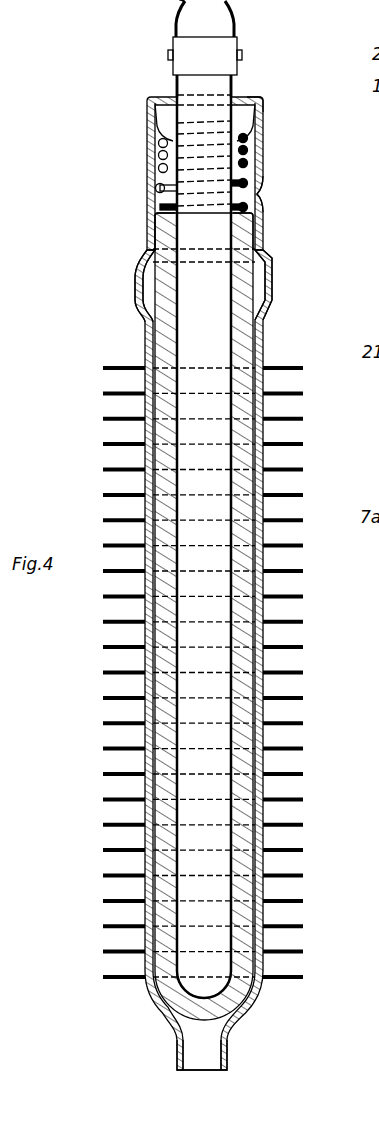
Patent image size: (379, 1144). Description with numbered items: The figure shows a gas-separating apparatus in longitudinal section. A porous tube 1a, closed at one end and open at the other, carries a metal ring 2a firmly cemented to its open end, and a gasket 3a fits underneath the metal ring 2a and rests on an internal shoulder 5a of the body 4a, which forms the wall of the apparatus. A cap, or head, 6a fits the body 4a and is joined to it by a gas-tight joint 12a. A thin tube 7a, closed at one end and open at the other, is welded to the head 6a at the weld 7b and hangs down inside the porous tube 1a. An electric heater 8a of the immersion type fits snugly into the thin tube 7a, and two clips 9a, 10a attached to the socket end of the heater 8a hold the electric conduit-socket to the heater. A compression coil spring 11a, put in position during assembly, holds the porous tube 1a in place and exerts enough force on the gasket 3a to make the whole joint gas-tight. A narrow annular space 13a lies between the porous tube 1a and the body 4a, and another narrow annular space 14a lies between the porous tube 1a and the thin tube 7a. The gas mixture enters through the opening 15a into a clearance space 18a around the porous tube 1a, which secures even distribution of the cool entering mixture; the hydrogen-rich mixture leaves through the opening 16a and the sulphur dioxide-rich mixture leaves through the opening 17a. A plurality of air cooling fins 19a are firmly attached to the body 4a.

The porous tube 1a is at (247, 585).
The metal ring 2a is at (265, 235).
The gasket 3a is at (256, 251).
The body 4a is at (265, 342).
The internal shoulder 5a is at (150, 254).
The cap 6a is at (265, 111).
The thin tube 7a is at (176, 112).
The weld 7b is at (158, 188).
The electric heater 8a is at (185, 88).
The clip 9a is at (177, 21).
The clip 10a is at (232, 23).
The compression coil spring 11a is at (160, 155).
The gas-tight joint 12a is at (260, 97).
The narrow annular space 13a is at (263, 638).
The narrow annular space 14a is at (233, 690).
The gas mixture inlet opening 15a is at (272, 291).
The hydrogen-rich mixture outlet opening 16a is at (263, 195).
The sulphur dioxide-rich mixture outlet opening 17a is at (200, 1060).
The clearance space 18a is at (148, 290).
The air cooling fins 19a is at (303, 773).